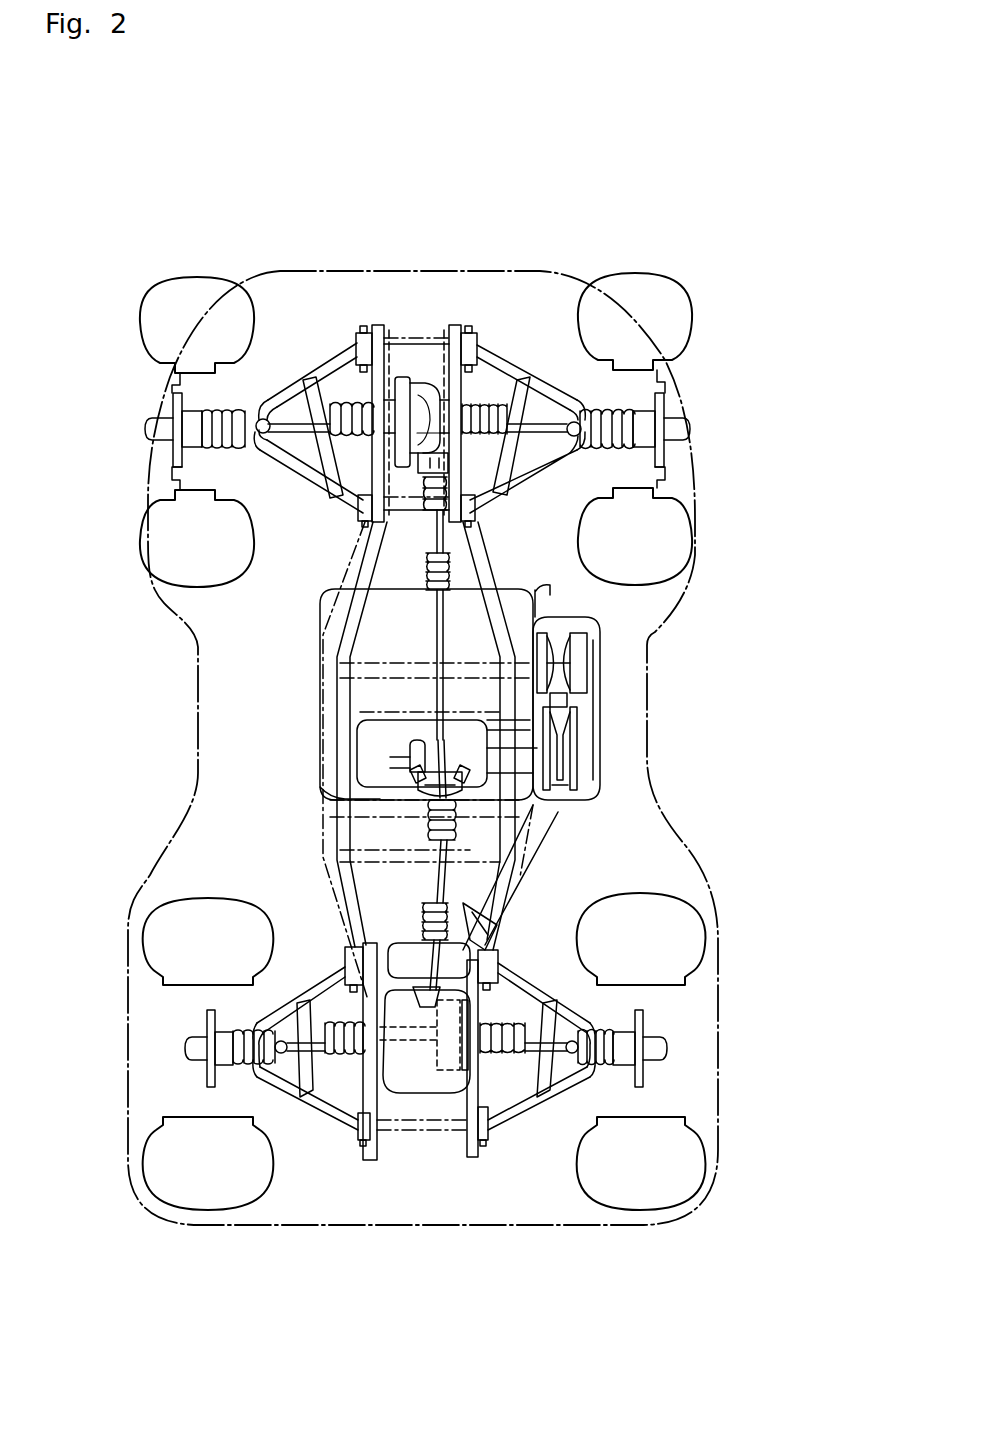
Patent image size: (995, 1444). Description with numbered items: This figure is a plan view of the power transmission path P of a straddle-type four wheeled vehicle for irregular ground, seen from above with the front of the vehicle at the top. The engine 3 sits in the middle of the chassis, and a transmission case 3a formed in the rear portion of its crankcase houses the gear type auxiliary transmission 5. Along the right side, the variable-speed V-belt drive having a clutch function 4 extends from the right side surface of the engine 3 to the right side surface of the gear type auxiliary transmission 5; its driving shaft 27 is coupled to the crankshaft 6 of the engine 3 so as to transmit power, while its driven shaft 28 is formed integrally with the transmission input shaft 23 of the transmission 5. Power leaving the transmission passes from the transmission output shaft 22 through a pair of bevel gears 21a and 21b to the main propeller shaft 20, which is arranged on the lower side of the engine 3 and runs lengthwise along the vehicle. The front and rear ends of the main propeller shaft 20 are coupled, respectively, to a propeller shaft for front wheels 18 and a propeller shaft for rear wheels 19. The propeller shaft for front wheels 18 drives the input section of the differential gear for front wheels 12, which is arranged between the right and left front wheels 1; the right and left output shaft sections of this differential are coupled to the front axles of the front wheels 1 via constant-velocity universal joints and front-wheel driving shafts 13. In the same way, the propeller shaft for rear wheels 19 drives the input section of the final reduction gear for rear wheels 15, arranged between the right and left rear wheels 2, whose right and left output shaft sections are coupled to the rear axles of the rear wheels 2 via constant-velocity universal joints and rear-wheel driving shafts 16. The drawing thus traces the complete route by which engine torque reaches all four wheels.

The front wheels 1 is at (160, 290).
The rear wheels 2 is at (167, 1186).
The engine 3 is at (320, 622).
The transmission case 3a is at (320, 787).
The variable-speed V-belt drive having a clutch function 4 is at (640, 719).
The gear type auxiliary transmission 5 is at (357, 770).
The crankshaft 6 is at (487, 637).
The differential gear for front wheels 12 is at (420, 378).
The front-wheel driving shafts 13 is at (287, 420).
The final reduction gear for rear wheels 15 is at (423, 1077).
The rear-wheel driving shafts 16 is at (305, 1060).
The propeller shaft for front wheels 18 is at (427, 545).
The propeller shaft for rear wheels 19 is at (463, 903).
The main propeller shaft 20 is at (438, 737).
The bevel gear 21a is at (427, 790).
The bevel gear 21b is at (422, 773).
The transmission output shaft 22 is at (400, 757).
The transmission input shaft 23 is at (485, 745).
The driving shaft 27 is at (600, 667).
The driven shaft 28 is at (597, 787).
The power transmission path P is at (290, 703).